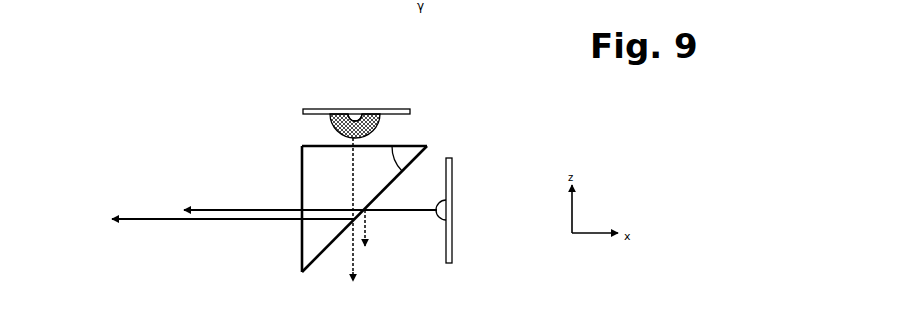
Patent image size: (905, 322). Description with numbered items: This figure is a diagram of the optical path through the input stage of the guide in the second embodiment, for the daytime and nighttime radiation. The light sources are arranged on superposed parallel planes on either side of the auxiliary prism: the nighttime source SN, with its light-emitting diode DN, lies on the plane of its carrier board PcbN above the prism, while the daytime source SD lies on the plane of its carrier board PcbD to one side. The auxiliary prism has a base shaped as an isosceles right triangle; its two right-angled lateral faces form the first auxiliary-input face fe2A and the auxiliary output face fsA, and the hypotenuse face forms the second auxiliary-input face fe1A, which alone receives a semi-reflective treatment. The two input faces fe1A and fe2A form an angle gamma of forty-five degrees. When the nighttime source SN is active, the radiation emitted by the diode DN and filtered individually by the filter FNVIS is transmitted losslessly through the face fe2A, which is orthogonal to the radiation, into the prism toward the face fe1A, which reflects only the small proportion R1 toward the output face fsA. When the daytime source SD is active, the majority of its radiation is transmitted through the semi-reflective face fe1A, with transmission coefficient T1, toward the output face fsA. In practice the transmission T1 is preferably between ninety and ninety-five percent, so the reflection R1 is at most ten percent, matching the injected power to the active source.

The light-emitting diode DN is at (355, 118).
The nighttime source SN is at (420, 85).
The carrier board PcbN is at (412, 112).
The NVIS filter FNVIS is at (373, 132).
The first auxiliary-input face fe2A is at (323, 146).
The auxiliary output face fsA is at (302, 172).
The second auxiliary-input face fe1A is at (320, 262).
The angle gamma is at (389, 160).
The transmission level T1 is at (284, 198).
The reflection level R1 is at (194, 217).
The carrier board PcbD is at (452, 160).
The daytime source SD is at (478, 204).